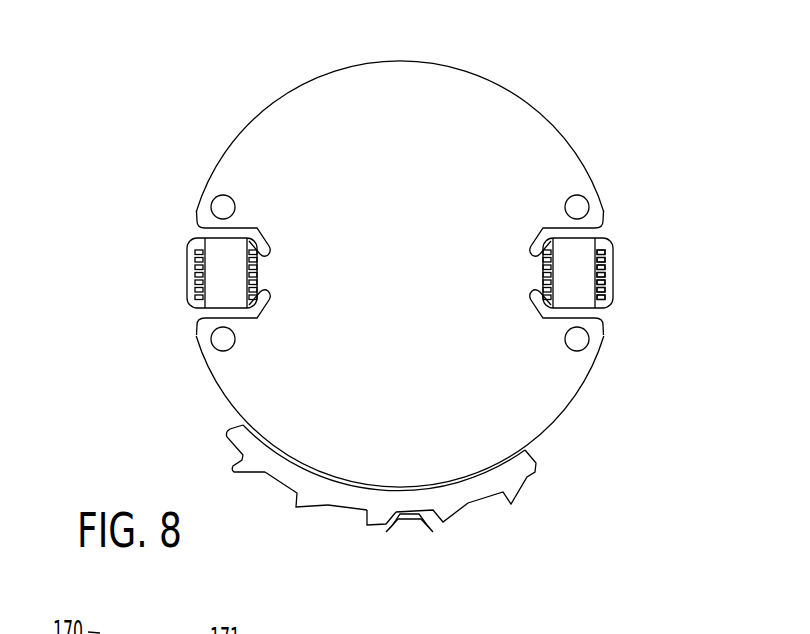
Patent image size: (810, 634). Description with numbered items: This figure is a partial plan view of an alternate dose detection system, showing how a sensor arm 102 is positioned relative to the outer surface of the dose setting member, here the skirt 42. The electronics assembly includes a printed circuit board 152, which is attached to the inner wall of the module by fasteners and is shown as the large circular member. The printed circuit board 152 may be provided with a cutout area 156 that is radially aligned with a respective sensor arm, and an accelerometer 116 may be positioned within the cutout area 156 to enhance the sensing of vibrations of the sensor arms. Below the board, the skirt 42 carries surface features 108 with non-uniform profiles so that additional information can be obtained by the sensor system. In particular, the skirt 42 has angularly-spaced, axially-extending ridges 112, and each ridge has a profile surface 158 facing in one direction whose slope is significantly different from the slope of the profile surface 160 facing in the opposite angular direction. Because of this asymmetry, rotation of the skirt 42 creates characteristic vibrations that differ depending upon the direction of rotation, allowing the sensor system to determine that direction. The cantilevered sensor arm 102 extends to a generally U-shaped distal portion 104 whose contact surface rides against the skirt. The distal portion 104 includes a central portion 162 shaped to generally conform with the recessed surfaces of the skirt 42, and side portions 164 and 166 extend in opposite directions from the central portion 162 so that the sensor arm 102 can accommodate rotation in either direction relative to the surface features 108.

The printed circuit board 152 is at (442, 105).
The accelerometer 116 is at (213, 273).
The cutout area 156 is at (612, 282).
The surface features 108 is at (304, 515).
The ridges 112 is at (243, 473).
The profile surface 158 is at (300, 492).
The skirt 42 is at (343, 498).
The profile surface 160 is at (381, 528).
The side portion 166 is at (442, 518).
The central portion 162 is at (408, 518).
The side portion 164 is at (399, 528).
The distal portion 104 is at (439, 527).
The sensor arm 102 is at (304, 515).